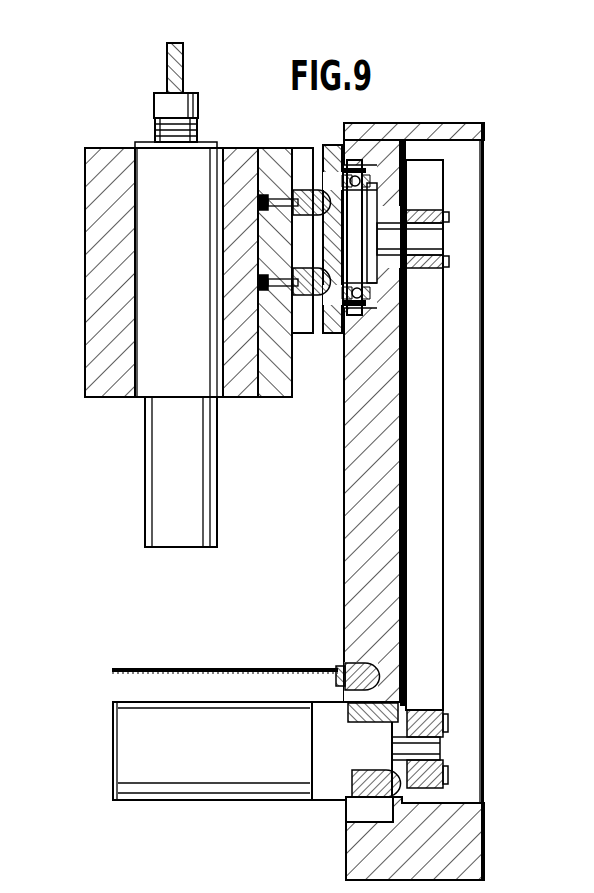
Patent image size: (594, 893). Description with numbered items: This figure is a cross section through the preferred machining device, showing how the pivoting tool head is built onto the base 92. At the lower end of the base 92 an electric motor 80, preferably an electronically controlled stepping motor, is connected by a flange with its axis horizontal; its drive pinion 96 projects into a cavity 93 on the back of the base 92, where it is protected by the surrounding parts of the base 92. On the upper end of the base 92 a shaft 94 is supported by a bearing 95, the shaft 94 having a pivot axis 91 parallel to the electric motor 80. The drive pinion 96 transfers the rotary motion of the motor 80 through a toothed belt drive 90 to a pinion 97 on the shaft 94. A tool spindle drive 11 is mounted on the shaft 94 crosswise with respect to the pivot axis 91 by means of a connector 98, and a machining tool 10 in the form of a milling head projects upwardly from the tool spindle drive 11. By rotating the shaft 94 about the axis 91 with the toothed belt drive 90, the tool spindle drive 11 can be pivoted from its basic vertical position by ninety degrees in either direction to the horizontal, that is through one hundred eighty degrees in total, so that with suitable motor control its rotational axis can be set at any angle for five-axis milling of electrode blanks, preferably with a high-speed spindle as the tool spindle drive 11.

The machining tool 10 is at (175, 69).
The tool spindle drive 11 is at (155, 318).
The electric motor 80 is at (140, 728).
The toothed belt drive 90 is at (425, 473).
The pivot axis 91 is at (452, 232).
The base 92 is at (346, 850).
The cavity 93 is at (458, 656).
The shaft 94 is at (352, 221).
The bearing 95 is at (378, 130).
The drive pinion 96 is at (442, 712).
The pinion 97 is at (435, 243).
The connector 98 is at (236, 147).